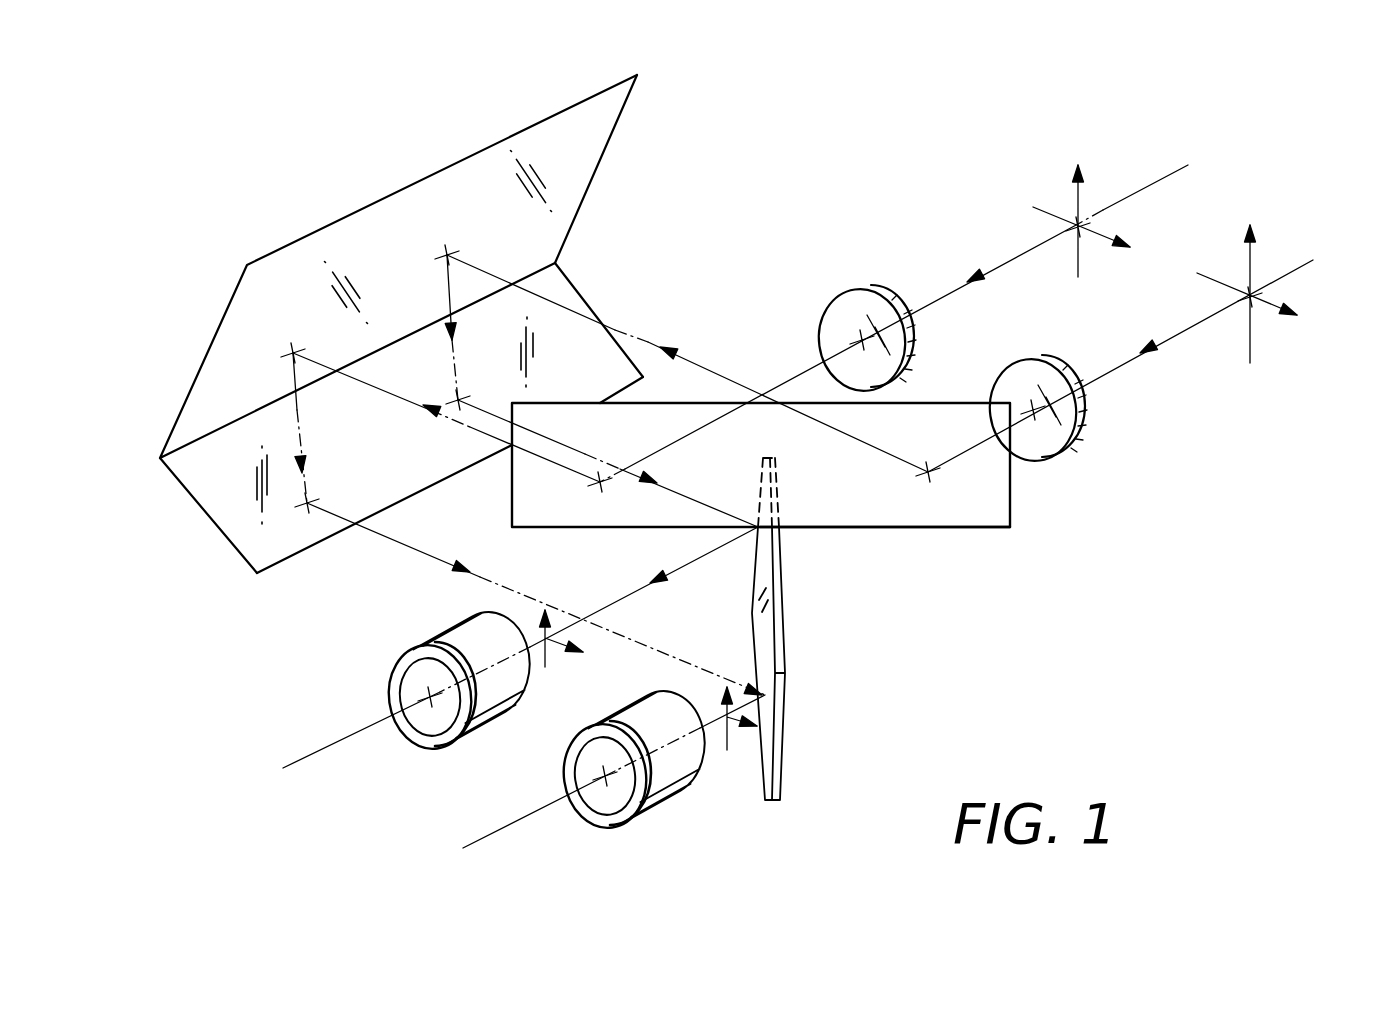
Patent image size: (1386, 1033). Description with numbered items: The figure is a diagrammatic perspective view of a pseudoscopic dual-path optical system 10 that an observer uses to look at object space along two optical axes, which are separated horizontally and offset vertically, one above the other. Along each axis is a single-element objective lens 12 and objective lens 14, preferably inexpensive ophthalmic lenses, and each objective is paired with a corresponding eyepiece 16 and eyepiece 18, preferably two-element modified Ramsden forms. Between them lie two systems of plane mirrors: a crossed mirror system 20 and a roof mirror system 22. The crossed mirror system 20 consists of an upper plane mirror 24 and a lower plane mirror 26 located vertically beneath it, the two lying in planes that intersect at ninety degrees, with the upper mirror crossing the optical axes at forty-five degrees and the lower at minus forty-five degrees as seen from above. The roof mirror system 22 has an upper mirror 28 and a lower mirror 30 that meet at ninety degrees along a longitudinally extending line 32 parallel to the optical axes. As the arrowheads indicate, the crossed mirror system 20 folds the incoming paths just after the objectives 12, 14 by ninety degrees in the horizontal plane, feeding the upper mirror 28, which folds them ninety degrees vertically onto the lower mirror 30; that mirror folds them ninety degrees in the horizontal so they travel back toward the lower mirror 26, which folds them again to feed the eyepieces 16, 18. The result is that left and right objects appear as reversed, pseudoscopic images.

The dual-path optical system 10 is at (722, 140).
The objective lens 12 is at (852, 285).
The objective lens 14 is at (1077, 448).
The eyepiece 16 is at (490, 722).
The eyepiece 18 is at (657, 808).
The crossed mirror system 20 is at (787, 537).
The roof mirror system 22 is at (199, 368).
The upper plane mirror 24 is at (1000, 530).
The lower plane mirror 26 is at (783, 722).
The upper mirror 28 is at (596, 182).
The lower mirror 30 is at (596, 287).
The longitudinally extending line 32 is at (184, 448).